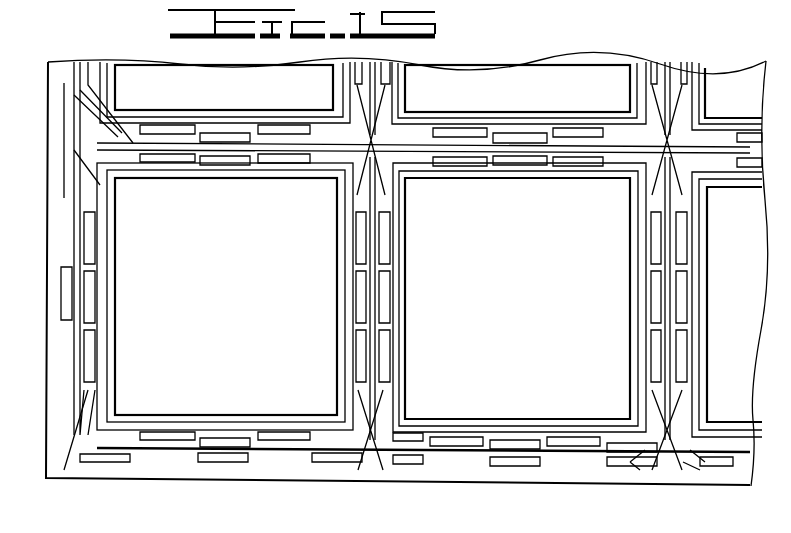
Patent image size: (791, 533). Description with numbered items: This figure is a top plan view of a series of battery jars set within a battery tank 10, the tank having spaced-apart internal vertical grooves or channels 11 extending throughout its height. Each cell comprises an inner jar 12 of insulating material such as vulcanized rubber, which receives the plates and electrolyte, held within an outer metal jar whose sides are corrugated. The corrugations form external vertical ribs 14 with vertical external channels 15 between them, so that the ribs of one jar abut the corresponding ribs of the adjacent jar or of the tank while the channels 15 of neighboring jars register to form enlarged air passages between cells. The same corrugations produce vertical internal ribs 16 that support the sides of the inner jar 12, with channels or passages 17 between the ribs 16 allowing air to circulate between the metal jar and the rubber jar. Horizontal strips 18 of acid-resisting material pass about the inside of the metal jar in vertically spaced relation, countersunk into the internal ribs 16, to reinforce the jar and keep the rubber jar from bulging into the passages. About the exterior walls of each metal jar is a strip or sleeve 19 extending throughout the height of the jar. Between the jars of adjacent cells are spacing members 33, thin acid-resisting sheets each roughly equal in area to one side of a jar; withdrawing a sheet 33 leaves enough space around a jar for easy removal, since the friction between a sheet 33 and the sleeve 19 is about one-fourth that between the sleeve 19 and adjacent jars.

The battery tank 10 is at (420, 478).
The internal vertical grooves or channels 11 is at (62, 304).
The inner jar 12 is at (429, 249).
The external vertical ribs 14 is at (663, 240).
The vertical external channels 15 is at (85, 312).
The vertical internal ribs 16 is at (658, 297).
The channels or passages 17 is at (162, 437).
The strips 18 is at (317, 433).
The strip of metal (sleeve) 19 is at (118, 137).
The spacing members 33 is at (397, 150).